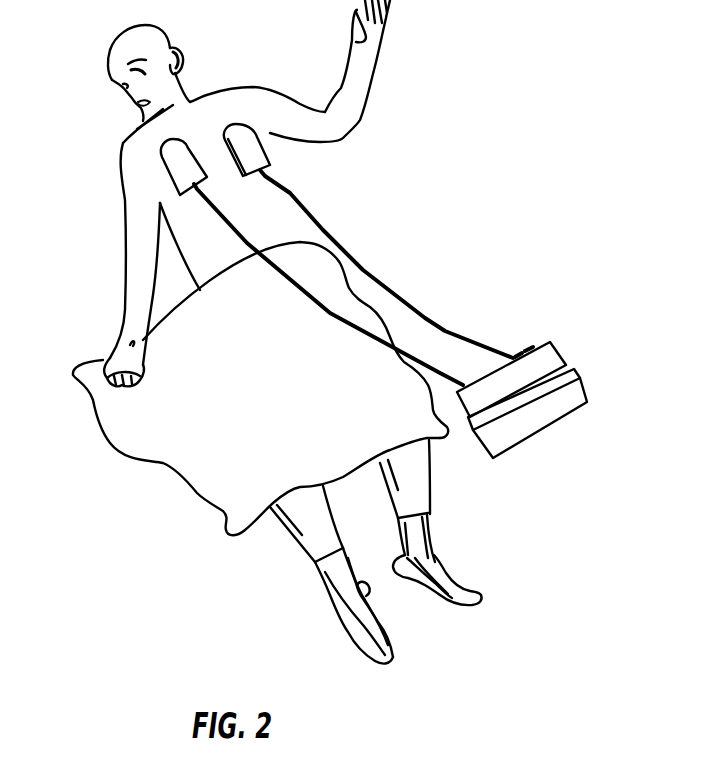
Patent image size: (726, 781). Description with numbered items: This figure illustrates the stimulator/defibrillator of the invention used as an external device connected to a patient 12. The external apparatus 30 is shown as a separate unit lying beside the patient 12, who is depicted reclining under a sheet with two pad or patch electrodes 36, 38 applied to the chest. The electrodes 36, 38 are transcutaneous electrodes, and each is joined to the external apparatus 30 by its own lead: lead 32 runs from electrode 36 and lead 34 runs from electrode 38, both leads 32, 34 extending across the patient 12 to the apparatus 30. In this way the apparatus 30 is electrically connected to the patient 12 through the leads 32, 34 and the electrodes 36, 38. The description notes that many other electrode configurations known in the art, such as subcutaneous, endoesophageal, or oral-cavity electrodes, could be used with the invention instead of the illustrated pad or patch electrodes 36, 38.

The patient 12 is at (252, 88).
The defibrillator unit 30 is at (547, 357).
The lead 32 is at (333, 314).
The lead 34 is at (425, 313).
The pad or patch electrode 36 is at (177, 163).
The pad or patch electrode 38 is at (252, 148).